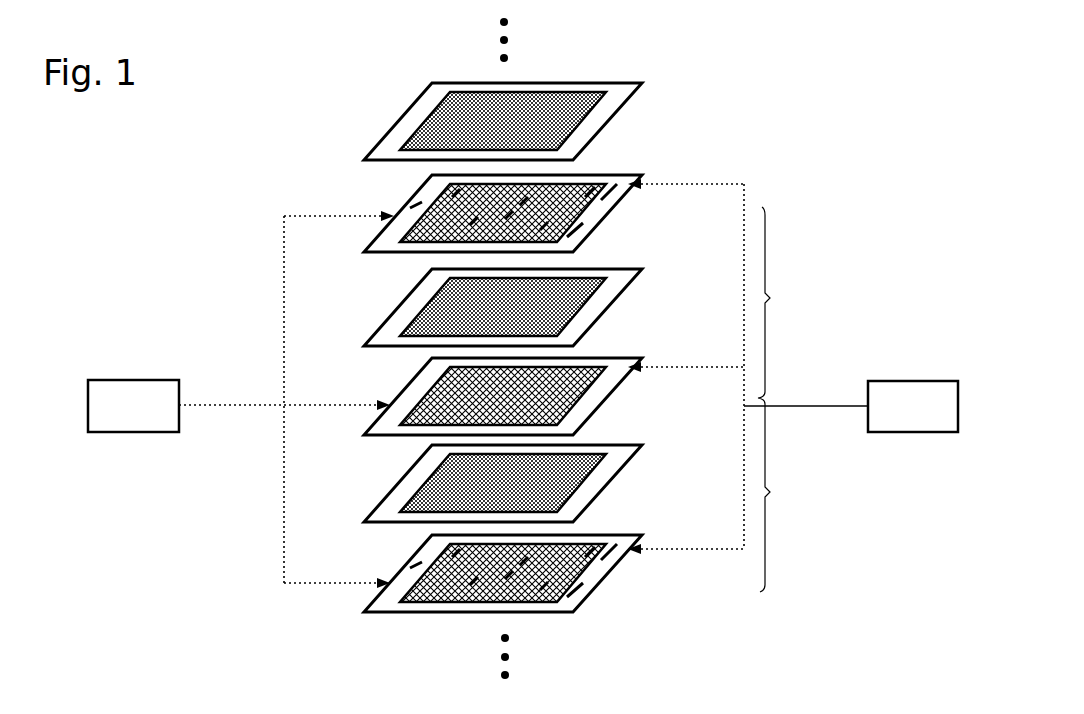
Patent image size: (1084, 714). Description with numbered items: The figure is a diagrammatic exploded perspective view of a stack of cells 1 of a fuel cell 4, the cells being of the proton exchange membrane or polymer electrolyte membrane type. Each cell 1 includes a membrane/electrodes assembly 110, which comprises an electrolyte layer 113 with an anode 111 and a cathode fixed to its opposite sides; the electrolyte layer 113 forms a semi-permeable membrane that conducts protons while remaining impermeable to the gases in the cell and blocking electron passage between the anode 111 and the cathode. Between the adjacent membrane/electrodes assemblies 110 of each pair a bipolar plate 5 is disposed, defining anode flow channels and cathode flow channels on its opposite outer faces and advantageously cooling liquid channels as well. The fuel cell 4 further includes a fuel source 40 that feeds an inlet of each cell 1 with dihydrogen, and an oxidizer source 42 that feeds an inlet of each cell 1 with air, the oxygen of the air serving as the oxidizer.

The cell 1 is at (786, 399).
The fuel cell 4 is at (793, 91).
The bipolar plate 5 is at (624, 212).
The membrane/electrodes assembly 110 is at (521, 297).
The anode 111 is at (419, 130).
The electrolyte layer 113 is at (402, 119).
The fuel source 40 is at (118, 419).
The oxidizer source 42 is at (898, 419).